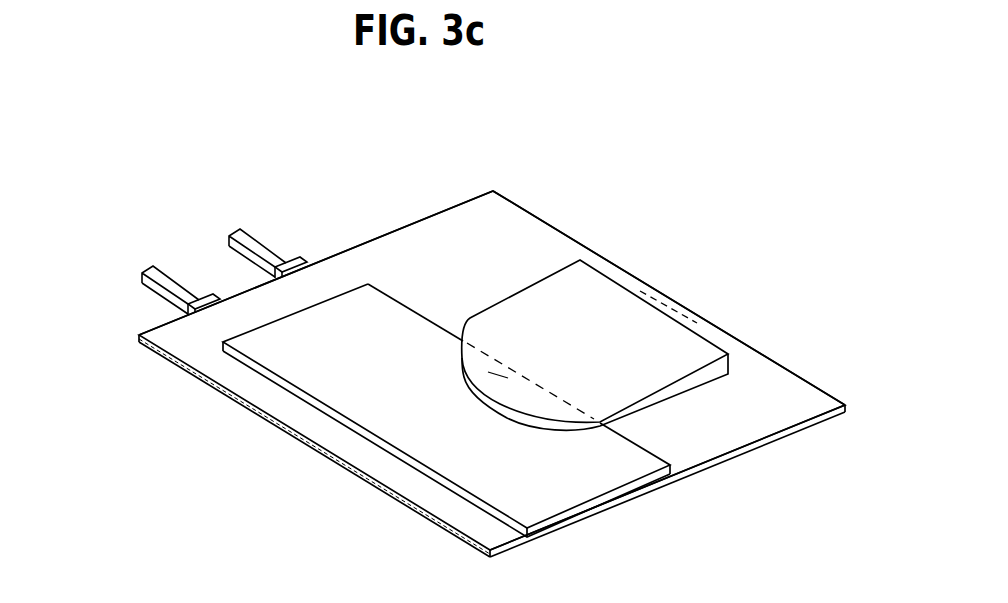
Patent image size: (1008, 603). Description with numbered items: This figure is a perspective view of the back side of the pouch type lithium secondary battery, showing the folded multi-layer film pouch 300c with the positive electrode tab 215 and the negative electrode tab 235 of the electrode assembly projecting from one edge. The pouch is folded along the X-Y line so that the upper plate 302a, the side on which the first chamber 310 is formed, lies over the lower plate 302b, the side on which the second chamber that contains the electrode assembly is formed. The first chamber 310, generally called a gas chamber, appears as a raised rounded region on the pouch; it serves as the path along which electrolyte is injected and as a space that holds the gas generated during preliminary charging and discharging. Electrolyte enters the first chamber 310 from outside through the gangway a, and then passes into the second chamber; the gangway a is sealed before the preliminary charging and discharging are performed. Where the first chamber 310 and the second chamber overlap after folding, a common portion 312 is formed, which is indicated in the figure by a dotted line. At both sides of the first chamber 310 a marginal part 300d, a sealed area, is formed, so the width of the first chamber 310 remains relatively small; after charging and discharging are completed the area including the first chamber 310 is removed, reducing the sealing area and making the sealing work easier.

The negative electrode tab 235 is at (143, 262).
The positive electrode tab 215 is at (233, 228).
The upper plate 302a is at (150, 332).
The lower plate 302b is at (157, 355).
The marginal part 300d is at (425, 230).
The multi-layer film pouch 300c is at (518, 202).
The first chamber 310 is at (708, 348).
The common portion 312 is at (498, 373).
The gangway a is at (667, 293).